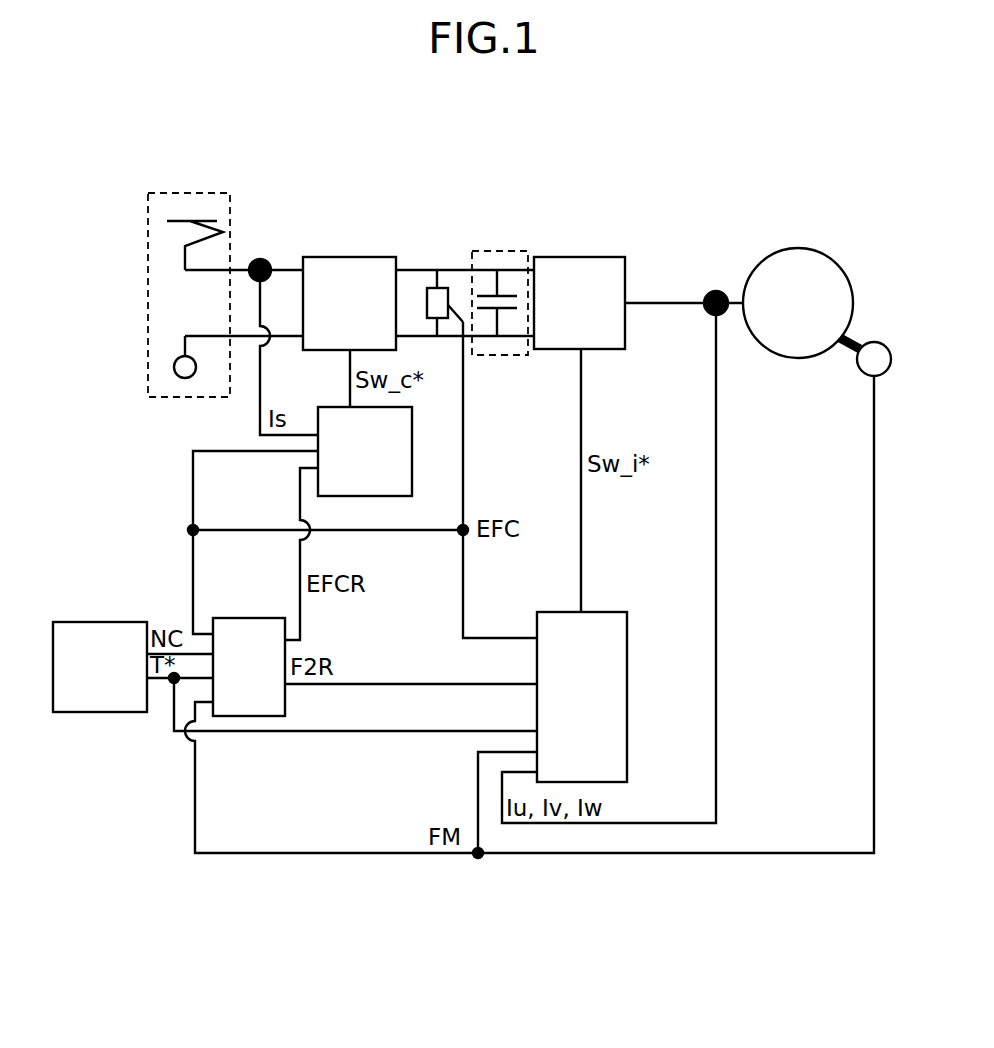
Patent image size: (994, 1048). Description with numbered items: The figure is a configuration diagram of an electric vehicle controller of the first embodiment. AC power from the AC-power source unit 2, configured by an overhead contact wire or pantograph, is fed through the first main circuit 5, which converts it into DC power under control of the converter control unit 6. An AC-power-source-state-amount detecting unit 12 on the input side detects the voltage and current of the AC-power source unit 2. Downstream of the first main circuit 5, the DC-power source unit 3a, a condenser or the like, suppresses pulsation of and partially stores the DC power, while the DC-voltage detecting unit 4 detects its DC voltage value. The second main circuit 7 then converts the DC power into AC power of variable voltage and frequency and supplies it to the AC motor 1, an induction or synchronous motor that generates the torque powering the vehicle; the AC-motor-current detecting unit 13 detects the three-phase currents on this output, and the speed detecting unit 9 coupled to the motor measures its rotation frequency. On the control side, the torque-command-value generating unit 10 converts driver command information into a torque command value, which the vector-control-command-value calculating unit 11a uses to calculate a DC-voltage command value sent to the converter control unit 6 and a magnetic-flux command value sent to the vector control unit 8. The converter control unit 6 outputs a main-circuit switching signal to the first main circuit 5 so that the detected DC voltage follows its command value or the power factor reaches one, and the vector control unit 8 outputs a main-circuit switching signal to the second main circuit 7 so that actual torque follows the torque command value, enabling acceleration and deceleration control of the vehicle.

The AC motor 1 is at (822, 251).
The AC-power source unit 2 is at (189, 193).
The DC-power source unit 3a is at (511, 251).
The DC-voltage detecting unit 4 is at (439, 288).
The first main circuit 5 is at (366, 257).
The converter control unit 6 is at (413, 458).
The second main circuit 7 is at (603, 257).
The vector control unit 8 is at (604, 612).
The speed detecting unit 9 is at (878, 342).
The torque-command-value generating unit 10 is at (126, 622).
The vector-control-command-value calculating unit 11a is at (255, 618).
The AC-power-source-state-amount detecting unit 12 is at (261, 258).
The AC-motor-current detecting unit 13 is at (716, 291).